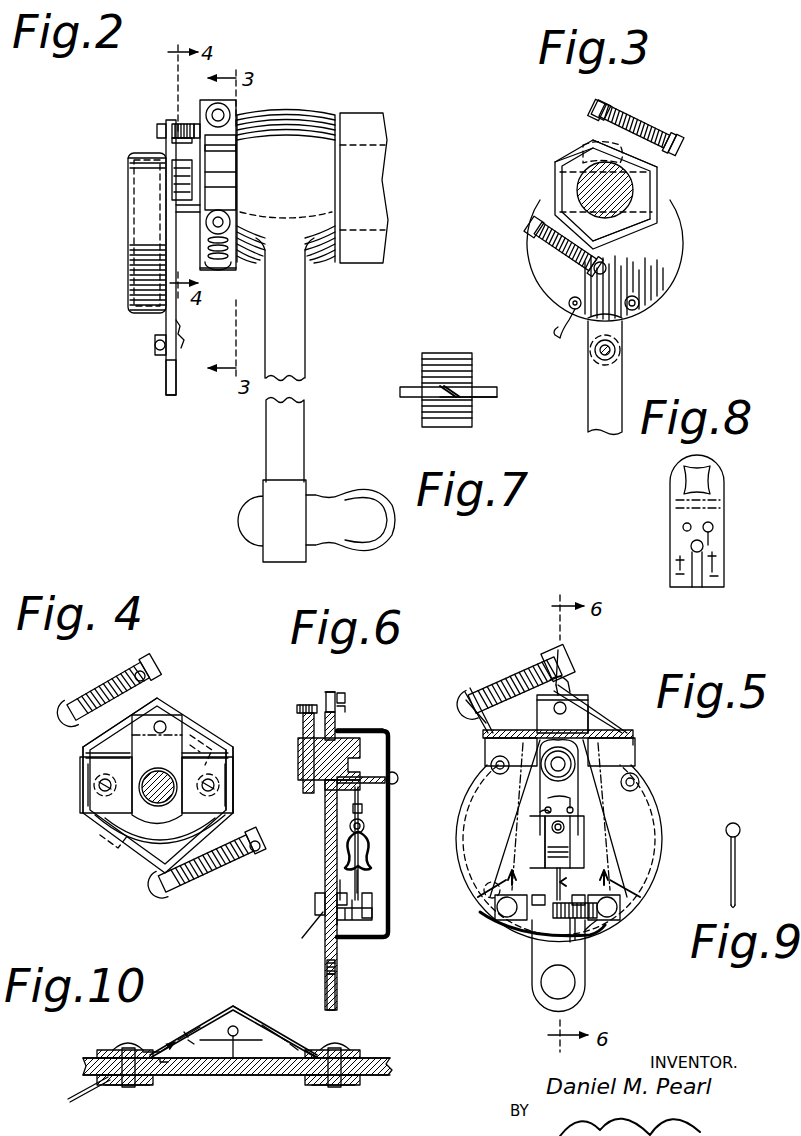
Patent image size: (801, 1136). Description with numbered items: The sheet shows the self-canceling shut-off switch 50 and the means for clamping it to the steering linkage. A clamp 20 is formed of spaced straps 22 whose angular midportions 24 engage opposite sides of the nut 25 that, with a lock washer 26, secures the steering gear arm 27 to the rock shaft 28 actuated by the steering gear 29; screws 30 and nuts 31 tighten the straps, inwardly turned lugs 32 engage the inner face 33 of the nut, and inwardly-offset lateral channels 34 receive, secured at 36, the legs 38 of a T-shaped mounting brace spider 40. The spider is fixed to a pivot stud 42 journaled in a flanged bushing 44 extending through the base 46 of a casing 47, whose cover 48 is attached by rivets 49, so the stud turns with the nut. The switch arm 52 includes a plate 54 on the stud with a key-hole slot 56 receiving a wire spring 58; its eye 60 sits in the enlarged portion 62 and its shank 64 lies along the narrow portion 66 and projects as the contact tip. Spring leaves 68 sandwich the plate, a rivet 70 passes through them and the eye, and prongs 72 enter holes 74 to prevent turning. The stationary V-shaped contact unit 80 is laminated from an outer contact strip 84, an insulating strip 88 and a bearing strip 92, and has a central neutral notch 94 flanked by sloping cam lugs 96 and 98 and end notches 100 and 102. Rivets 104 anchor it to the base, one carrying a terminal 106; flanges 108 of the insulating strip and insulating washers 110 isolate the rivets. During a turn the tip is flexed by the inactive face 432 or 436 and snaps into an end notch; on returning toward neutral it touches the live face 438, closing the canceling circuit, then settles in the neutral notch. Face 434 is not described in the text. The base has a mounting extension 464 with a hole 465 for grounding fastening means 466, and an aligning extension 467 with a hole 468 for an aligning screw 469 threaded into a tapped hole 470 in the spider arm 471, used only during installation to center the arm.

In FIG. 2, the clamp 20 is at (202, 256).
In FIG. 3, the clamp 20 is at (660, 132).
In FIG. 4, the clamp 20 is at (85, 698).
In FIG. 5, the clamp 20 is at (528, 660).
In FIG. 2, the straps 22 is at (240, 130).
In FIG. 3, the straps 22 is at (556, 176).
In FIG. 4, the straps 22 is at (160, 700).
In FIG. 5, the straps 22 is at (470, 692).
In FIG. 2, the angular midportions 24 is at (238, 158).
In FIG. 3, the angular midportions 24 is at (555, 160).
In FIG. 4, the angular midportions 24 is at (235, 748).
In FIG. 5, the angular midportions 24 is at (600, 735).
In FIG. 3, the nut 25 is at (594, 266).
In FIG. 4, the nut 25 is at (235, 753).
In FIG. 5, the nut 25 is at (514, 712).
In FIG. 2, the lock washer 26 is at (236, 187).
In FIG. 2, the steering gear arm 27 is at (306, 410).
In FIG. 2, the rock shaft 28 is at (365, 142).
In FIG. 3, the rock shaft 28 is at (640, 190).
In FIG. 2, the steering gear 29 is at (360, 115).
In FIG. 2, the screws 30 is at (226, 258).
In FIG. 3, the screws 30 is at (638, 135).
In FIG. 4, the screws 30 is at (66, 724).
In FIG. 5, the screws 30 is at (522, 682).
In FIG. 2, the nuts 31 is at (226, 112).
In FIG. 3, the nuts 31 is at (598, 112).
In FIG. 4, the nuts 31 is at (152, 668).
In FIG. 5, the nuts 31 is at (566, 655).
In FIG. 2, the lugs 32 is at (238, 143).
In FIG. 3, the lugs 32 is at (552, 165).
In FIG. 4, the lugs 32 is at (208, 748).
In FIG. 2, the inner face 33 is at (238, 172).
In FIG. 2, the lateral channels 34 is at (190, 211).
In FIG. 4, the lateral channels 34 is at (235, 817).
In FIG. 5, the lateral channels 34 is at (485, 735).
In FIG. 4, the securing points 36 is at (216, 786).
In FIG. 2, the legs 38 is at (188, 186).
In FIG. 3, the legs 38 is at (545, 208).
In FIG. 4, the legs 38 is at (234, 764).
In FIG. 5, the legs 38 is at (486, 752).
In FIG. 2, the mounting brace spider 40 is at (182, 124).
In FIG. 3, the mounting brace spider 40 is at (613, 120).
In FIG. 4, the mounting brace spider 40 is at (168, 722).
In FIG. 6, the mounting brace spider 40 is at (320, 705).
In FIG. 5, the mounting brace spider 40 is at (568, 704).
In FIG. 4, the pivot stud 42 is at (173, 790).
In FIG. 6, the pivot stud 42 is at (300, 766).
In FIG. 5, the pivot stud 42 is at (543, 762).
In FIG. 4, the flanged bushing 44 is at (162, 772).
In FIG. 6, the flanged bushing 44 is at (304, 742).
In FIG. 5, the flanged bushing 44 is at (562, 714).
In FIG. 2, the base 46 is at (172, 250).
In FIG. 6, the base 46 is at (332, 863).
In FIG. 10, the base 46 is at (274, 1076).
In FIG. 2, the casing 47 is at (130, 153).
In FIG. 6, the casing 47 is at (380, 729).
In FIG. 5, the casing 47 is at (644, 778).
In FIG. 2, the cover 48 is at (136, 290).
In FIG. 6, the cover 48 is at (388, 822).
In FIG. 5, the cover 48 is at (661, 854).
In FIG. 10, the cover 48 is at (396, 1070).
In FIG. 6, the rivets 49 is at (395, 772).
In FIG. 5, the rivets 49 is at (632, 790).
In FIG. 6, the shut-off switch 50 is at (376, 880).
In FIG. 6, the switch arm 52 is at (372, 806).
In FIG. 5, the switch arm 52 is at (546, 848).
In FIG. 7, the plate 54 is at (497, 392).
In FIG. 8, the plate 54 is at (715, 530).
In FIG. 6, the plate 54 is at (362, 790).
In FIG. 5, the plate 54 is at (580, 838).
In FIG. 8, the key-hole slot 56 is at (706, 548).
In FIG. 5, the wire spring 58 is at (622, 898).
In FIG. 9, the wire spring 58 is at (737, 870).
In FIG. 9, the eye 60 is at (733, 824).
In FIG. 8, the enlarged portion 62 is at (694, 546).
In FIG. 7, the shank 64 is at (450, 386).
In FIG. 6, the shank 64 is at (360, 870).
In FIG. 5, the shank 64 is at (546, 862).
In FIG. 9, the shank 64 is at (737, 892).
In FIG. 10, the shank 64 is at (231, 1036).
In FIG. 7, the narrow portion 66 is at (472, 397).
In FIG. 8, the narrow portion 66 is at (706, 566).
In FIG. 7, the spring leaves 68 is at (440, 355).
In FIG. 6, the spring leaves 68 is at (376, 845).
In FIG. 5, the spring leaves 68 is at (546, 838).
In FIG. 6, the rivet 70 is at (350, 826).
In FIG. 5, the rivet 70 is at (565, 827).
In FIG. 8, the prongs 72 is at (688, 522).
In FIG. 6, the prongs 72 is at (352, 808).
In FIG. 5, the prongs 72 is at (543, 812).
In FIG. 3, the holes 74 is at (567, 317).
In FIG. 8, the holes 74 is at (710, 523).
In FIG. 5, the holes 74 is at (548, 808).
In FIG. 6, the contact unit 80 is at (350, 930).
In FIG. 5, the contact unit 80 is at (520, 928).
In FIG. 10, the contact unit 80 is at (306, 1047).
In FIG. 6, the contact strip 84 is at (364, 910).
In FIG. 5, the contact strip 84 is at (623, 910).
In FIG. 10, the contact strip 84 is at (242, 1010).
In FIG. 10, the insulating strip 88 is at (175, 1035).
In FIG. 6, the bearing strip 92 is at (356, 918).
In FIG. 10, the bearing strip 92 is at (166, 1080).
In FIG. 5, the neutral notch 94 is at (584, 952).
In FIG. 10, the neutral notch 94 is at (230, 1003).
In FIG. 5, the cam lug 96 is at (582, 936).
In FIG. 10, the cam lug 96 is at (205, 1018).
In FIG. 5, the cam lug 98 is at (540, 932).
In FIG. 10, the cam lug 98 is at (280, 1032).
In FIG. 5, the end notch 100 is at (592, 926).
In FIG. 10, the end notch 100 is at (158, 1045).
In FIG. 5, the end notch 102 is at (503, 927).
In FIG. 10, the end notch 102 is at (295, 1040).
In FIG. 6, the rivets 104 is at (318, 901).
In FIG. 5, the rivets 104 is at (504, 916).
In FIG. 10, the rivets 104 is at (120, 1048).
In FIG. 6, the terminal 106 is at (325, 933).
In FIG. 10, the terminal 106 is at (76, 1092).
In FIG. 10, the flanges 108 is at (86, 1064).
In FIG. 6, the insulating washers 110 is at (326, 897).
In FIG. 10, the insulating washers 110 is at (112, 1086).
In FIG. 10, the inner face 432 is at (185, 1030).
In FIG. 10, the spring bend 434 is at (195, 1025).
In FIG. 10, the inner face 436 is at (264, 1040).
In FIG. 10, the live face 438 is at (275, 1025).
In FIG. 2, the mounting extension 464 is at (176, 362).
In FIG. 3, the mounting extension 464 is at (622, 336).
In FIG. 6, the mounting extension 464 is at (335, 1000).
In FIG. 5, the mounting extension 464 is at (588, 985).
In FIG. 6, the hole 465 is at (336, 968).
In FIG. 5, the hole 465 is at (552, 995).
In FIG. 2, the fastening means 466 is at (158, 344).
In FIG. 3, the fastening means 466 is at (639, 348).
In FIG. 2, the aligning extension 467 is at (162, 127).
In FIG. 6, the aligning extension 467 is at (342, 697).
In FIG. 5, the aligning extension 467 is at (592, 716).
In FIG. 6, the hole 468 is at (332, 694).
In FIG. 5, the hole 468 is at (572, 688).
In FIG. 2, the aligning screw 469 is at (176, 122).
In FIG. 3, the aligning screw 469 is at (585, 145).
In FIG. 4, the aligning screw 469 is at (172, 715).
In FIG. 6, the aligning screw 469 is at (346, 706).
In FIG. 6, the tapped hole 470 is at (300, 708).
In FIG. 2, the arm 471 is at (196, 124).
In FIG. 3, the arm 471 is at (674, 143).
In FIG. 4, the arm 471 is at (206, 735).
In FIG. 6, the arm 471 is at (327, 690).
In FIG. 5, the arm 471 is at (585, 700).